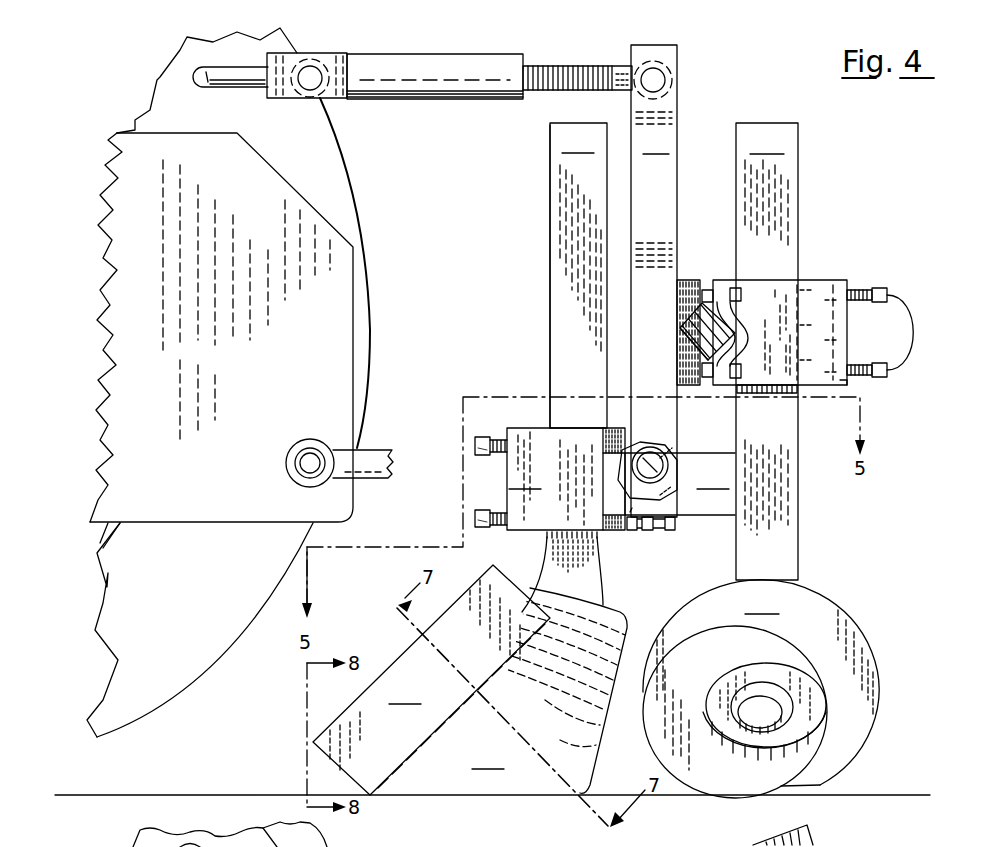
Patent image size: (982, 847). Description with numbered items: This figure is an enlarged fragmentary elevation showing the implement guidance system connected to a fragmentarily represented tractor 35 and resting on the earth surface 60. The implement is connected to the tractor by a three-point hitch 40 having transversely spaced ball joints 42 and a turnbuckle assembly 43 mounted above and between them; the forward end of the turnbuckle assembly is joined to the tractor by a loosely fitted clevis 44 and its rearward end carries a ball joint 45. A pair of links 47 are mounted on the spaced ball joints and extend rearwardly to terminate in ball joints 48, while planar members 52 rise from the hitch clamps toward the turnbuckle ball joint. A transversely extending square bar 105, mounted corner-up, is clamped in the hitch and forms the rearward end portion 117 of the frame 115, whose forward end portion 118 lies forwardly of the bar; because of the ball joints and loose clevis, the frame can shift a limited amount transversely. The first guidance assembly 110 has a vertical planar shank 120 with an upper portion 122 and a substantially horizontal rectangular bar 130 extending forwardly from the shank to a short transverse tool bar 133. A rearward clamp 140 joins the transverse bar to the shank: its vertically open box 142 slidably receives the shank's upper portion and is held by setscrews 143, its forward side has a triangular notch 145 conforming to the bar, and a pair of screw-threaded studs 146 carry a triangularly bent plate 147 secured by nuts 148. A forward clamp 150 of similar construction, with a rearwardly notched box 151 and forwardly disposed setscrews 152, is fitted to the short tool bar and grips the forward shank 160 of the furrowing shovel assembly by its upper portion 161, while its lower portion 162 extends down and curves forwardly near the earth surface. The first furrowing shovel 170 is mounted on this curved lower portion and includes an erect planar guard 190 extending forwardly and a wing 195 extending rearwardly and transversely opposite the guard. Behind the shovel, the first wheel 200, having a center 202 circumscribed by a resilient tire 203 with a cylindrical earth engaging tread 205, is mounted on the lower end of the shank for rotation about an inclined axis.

The tractor 35 is at (392, 402).
The three-point hitch 40 is at (412, 88).
The ball joints 42 is at (308, 453).
The turnbuckle assembly 43 is at (465, 99).
The clevis 44 is at (308, 75).
The ball joint 45 is at (660, 63).
The links 47 is at (360, 465).
The ball joints 48 is at (667, 467).
The planar members 52 is at (680, 274).
The earth surface 60 is at (176, 794).
The transversely extending bar 105 is at (705, 310).
The first guidance assembly 110 is at (440, 255).
The frame 115 is at (497, 343).
The rearward end portion 117 is at (860, 388).
The forward end portion 118 is at (498, 426).
The shank 120 is at (809, 351).
The upper portion 122 is at (810, 178).
The horizontal rectangular bar 130 is at (669, 498).
The short tool bar 133 is at (634, 512).
The rearward clamp 140 is at (808, 272).
The box 142 is at (852, 323).
The setscrews 143 is at (914, 332).
The triangular notch 145 is at (700, 322).
The screw-threaded studs 146 is at (739, 293).
The plate 147 is at (715, 380).
The nuts 148 is at (737, 307).
The forward clamp 150 is at (547, 493).
The box 151 is at (528, 536).
The setscrews 152 is at (500, 466).
The forward shank 160 is at (538, 314).
The upper portion 161 is at (578, 275).
The lower portion 162 is at (567, 656).
The first furrowing shovel 170 is at (506, 805).
The planar guard 190 is at (431, 680).
The wing 195 is at (461, 706).
The first wheel 200 is at (798, 689).
The center 202 is at (773, 715).
The resilient tire 203 is at (857, 722).
The tread 205 is at (762, 603).